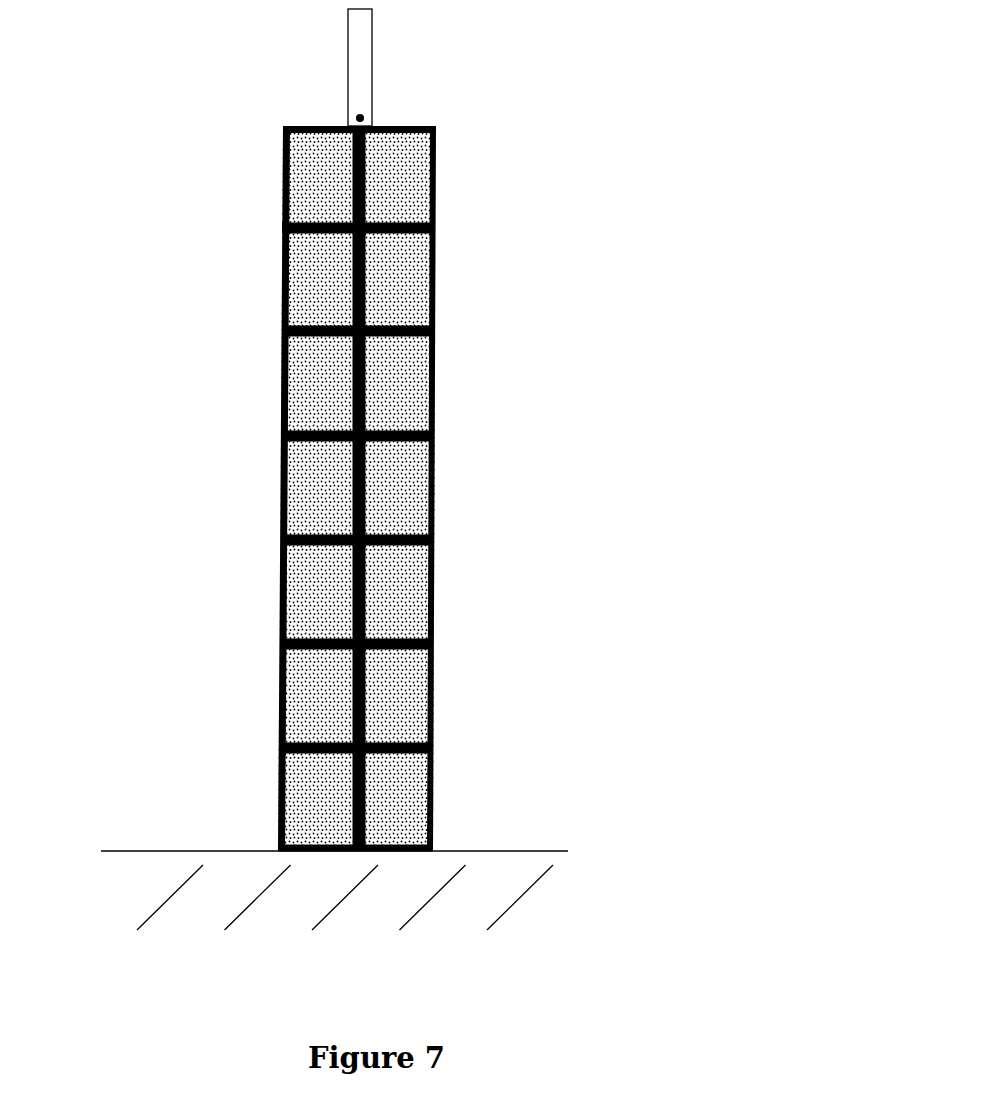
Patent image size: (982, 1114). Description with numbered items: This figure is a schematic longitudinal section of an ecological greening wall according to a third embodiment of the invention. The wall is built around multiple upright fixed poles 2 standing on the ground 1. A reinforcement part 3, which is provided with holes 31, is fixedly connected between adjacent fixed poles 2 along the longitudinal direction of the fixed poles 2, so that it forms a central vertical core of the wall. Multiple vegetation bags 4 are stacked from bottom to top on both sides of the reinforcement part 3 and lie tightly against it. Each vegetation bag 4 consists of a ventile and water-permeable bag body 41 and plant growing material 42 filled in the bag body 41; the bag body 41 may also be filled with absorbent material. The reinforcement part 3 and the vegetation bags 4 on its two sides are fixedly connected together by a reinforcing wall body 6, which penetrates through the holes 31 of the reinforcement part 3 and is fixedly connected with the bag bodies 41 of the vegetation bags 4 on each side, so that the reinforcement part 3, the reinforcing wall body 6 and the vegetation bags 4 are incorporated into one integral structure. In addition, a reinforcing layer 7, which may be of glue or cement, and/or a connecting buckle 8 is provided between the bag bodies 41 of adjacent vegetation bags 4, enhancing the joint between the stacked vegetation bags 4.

The ground 1 is at (517, 852).
The fixed pole 2 is at (367, 57).
The reinforcement part 3 is at (474, 482).
The holes 31 is at (434, 242).
The vegetation bag 4 is at (366, 488).
The bag body 41 is at (283, 382).
The plant growing material 42 is at (283, 418).
The reinforcing wall body 6 is at (434, 280).
The reinforcing layer 7 is at (434, 538).
The connecting buckle 8 is at (434, 510).